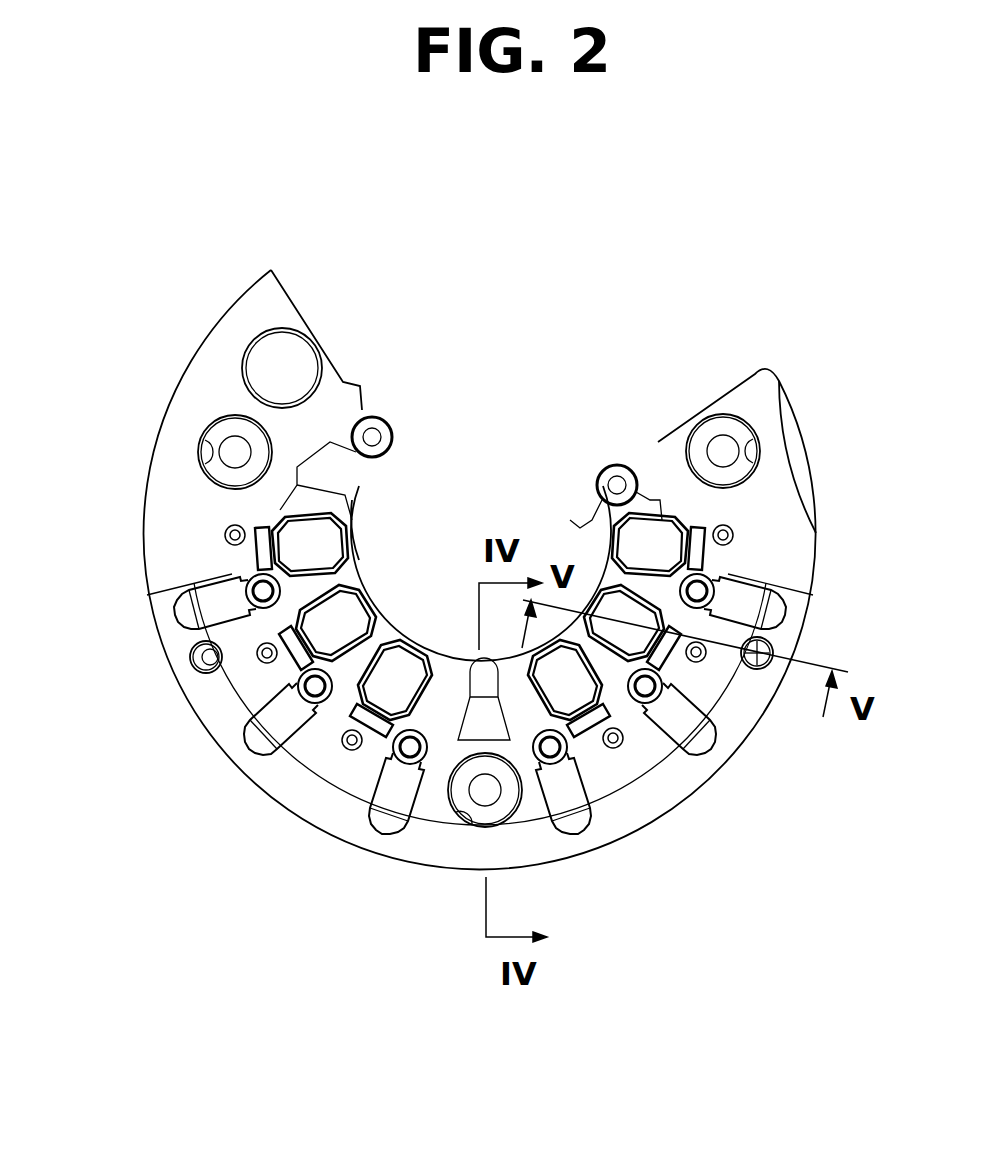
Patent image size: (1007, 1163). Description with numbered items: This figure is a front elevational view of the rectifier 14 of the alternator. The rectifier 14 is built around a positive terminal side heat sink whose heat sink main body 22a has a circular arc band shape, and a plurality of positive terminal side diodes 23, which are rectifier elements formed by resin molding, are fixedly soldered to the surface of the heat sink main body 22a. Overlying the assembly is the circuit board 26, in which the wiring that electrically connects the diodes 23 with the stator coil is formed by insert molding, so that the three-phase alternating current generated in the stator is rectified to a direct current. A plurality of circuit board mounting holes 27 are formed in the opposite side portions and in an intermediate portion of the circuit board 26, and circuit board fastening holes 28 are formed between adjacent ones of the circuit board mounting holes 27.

The rectifier 14 is at (562, 317).
The heat sink main body 22a is at (343, 580).
The positive terminal side diodes 23 is at (316, 544).
The circuit board 26 is at (783, 515).
The circuit board mounting holes 27 is at (207, 480).
The circuit board fastening holes 28 is at (196, 672).